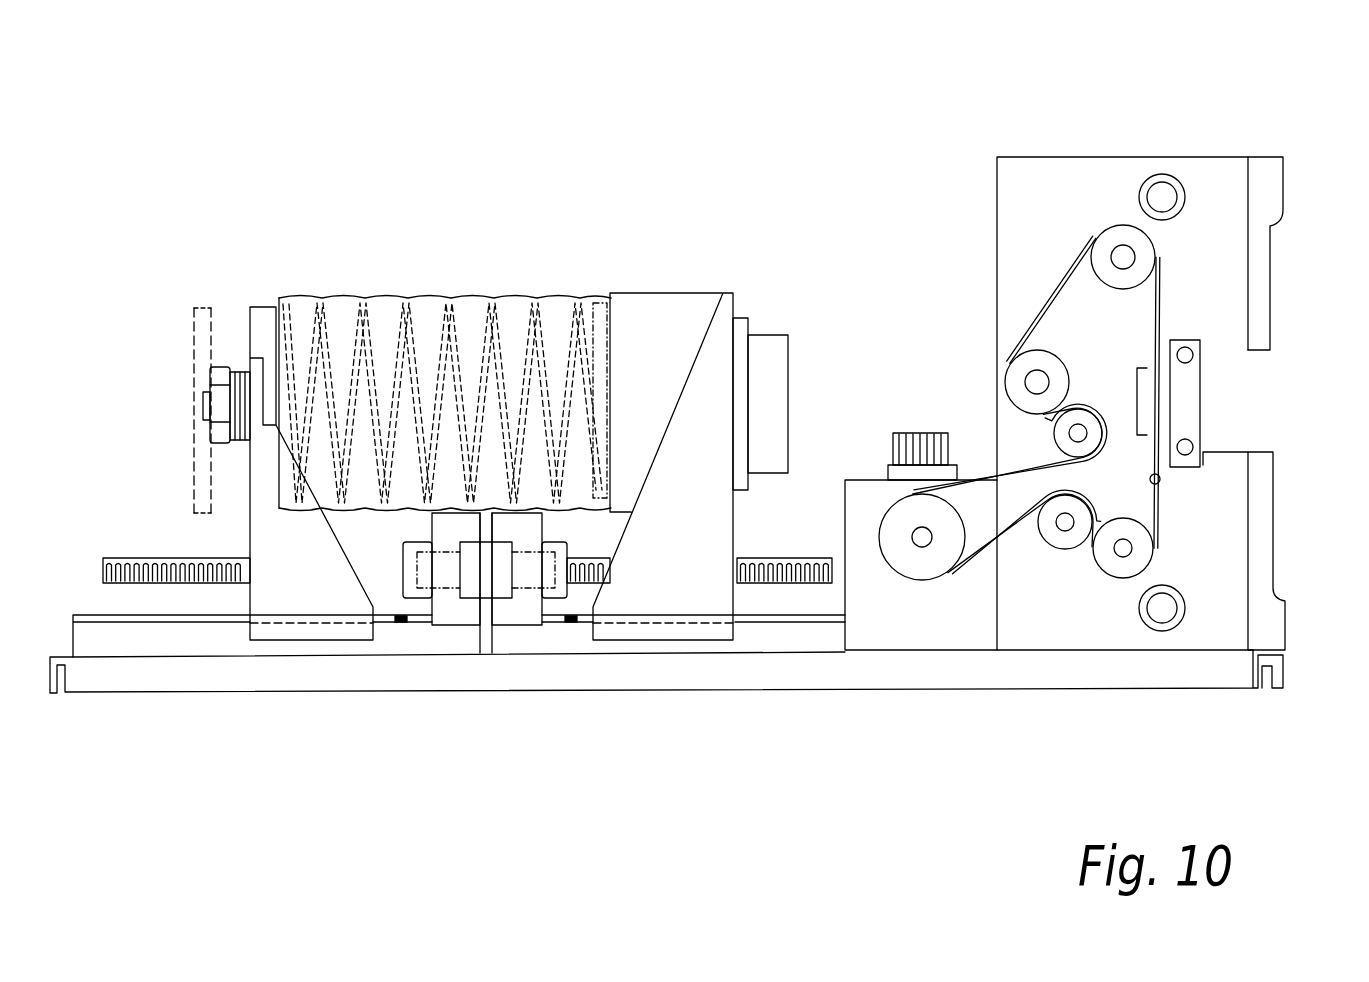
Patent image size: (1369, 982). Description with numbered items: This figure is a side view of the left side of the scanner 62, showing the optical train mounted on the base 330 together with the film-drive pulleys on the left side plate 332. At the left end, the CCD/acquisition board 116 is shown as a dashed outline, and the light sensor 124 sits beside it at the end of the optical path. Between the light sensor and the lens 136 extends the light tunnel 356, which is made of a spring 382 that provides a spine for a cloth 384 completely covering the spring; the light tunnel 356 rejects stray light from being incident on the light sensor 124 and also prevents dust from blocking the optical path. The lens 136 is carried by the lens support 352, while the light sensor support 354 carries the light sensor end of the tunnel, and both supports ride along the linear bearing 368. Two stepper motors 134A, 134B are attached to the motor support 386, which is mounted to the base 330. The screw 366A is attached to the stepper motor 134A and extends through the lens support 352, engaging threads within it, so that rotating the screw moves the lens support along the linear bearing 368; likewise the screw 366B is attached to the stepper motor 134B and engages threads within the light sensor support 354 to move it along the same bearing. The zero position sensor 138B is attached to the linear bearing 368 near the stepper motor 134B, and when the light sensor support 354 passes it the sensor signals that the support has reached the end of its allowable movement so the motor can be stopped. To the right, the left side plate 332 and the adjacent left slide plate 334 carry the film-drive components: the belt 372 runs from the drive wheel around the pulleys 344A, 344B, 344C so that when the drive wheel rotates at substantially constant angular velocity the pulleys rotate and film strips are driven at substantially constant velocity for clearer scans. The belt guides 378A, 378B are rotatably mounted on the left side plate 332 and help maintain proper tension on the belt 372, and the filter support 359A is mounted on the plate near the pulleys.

The scanner 62 is at (398, 169).
The CCD/acquisition board 116 is at (192, 340).
The light sensor 124 is at (222, 367).
The spring 382 is at (410, 355).
The cloth 384 is at (508, 295).
The light tunnel 356 is at (556, 285).
The lens 136 is at (762, 333).
The pulley 344A is at (1110, 233).
The left side plate 332 is at (1203, 167).
The left slide plate 334 is at (1273, 175).
The pulley 344B is at (1012, 382).
The belt guide 378A is at (1052, 437).
The filter support 359A is at (1192, 392).
The base 330 is at (138, 675).
The screw 366B is at (220, 583).
The light sensor support 354 is at (330, 598).
The zero position sensor 138B is at (400, 625).
The stepper motor 134B is at (455, 618).
The motor support 386 is at (483, 648).
The stepper motor 134A is at (527, 610).
The lens support 352 is at (680, 602).
The screw 366A is at (785, 583).
The linear bearing 368 is at (810, 630).
The belt 372 is at (1005, 532).
The belt guide 378B is at (1067, 553).
The pulley 344C is at (1123, 567).